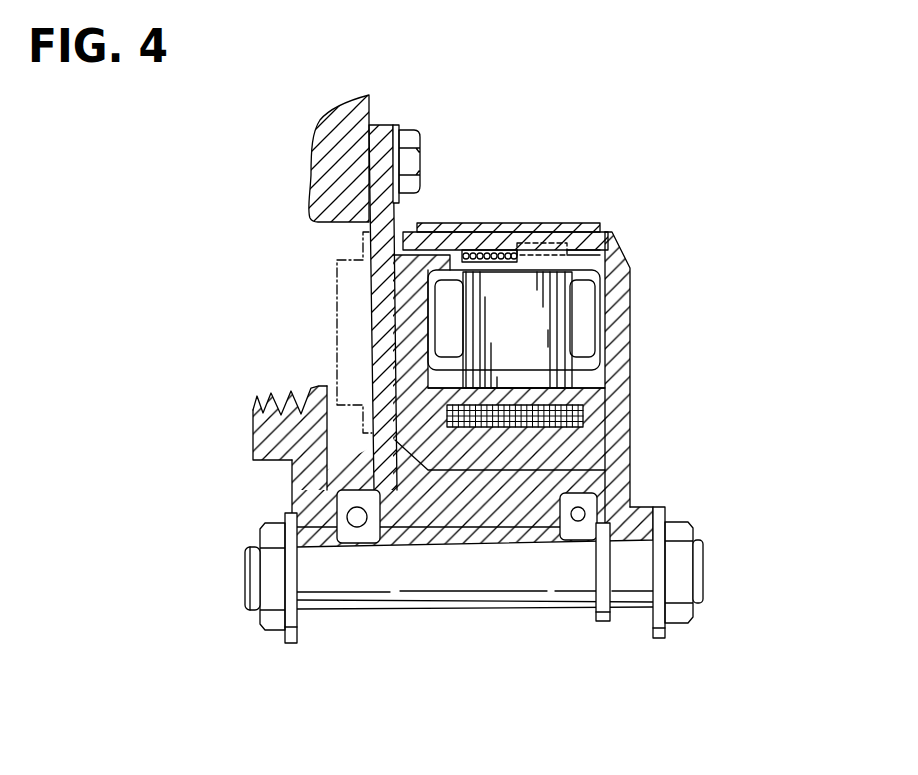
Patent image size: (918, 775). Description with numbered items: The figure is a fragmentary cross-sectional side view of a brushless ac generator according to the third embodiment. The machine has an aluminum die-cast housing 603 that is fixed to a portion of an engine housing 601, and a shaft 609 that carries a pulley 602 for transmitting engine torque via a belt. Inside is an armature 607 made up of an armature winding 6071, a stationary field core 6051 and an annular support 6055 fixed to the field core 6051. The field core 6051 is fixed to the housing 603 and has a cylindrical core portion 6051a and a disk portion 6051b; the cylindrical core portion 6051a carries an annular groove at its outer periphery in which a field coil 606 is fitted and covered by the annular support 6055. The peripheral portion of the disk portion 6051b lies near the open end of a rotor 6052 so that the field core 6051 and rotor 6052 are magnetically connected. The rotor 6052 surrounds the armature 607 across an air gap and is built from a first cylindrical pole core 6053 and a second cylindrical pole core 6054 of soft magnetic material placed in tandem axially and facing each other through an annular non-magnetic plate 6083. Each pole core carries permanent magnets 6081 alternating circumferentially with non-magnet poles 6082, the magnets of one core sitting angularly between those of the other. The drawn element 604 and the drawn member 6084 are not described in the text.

The engine housing 601 is at (333, 136).
The housing 603 is at (380, 188).
The mounting plate 604 is at (346, 287).
The field core 6051 is at (388, 357).
The cylindrical core portion 6051a is at (540, 457).
The disk portion 6051b is at (385, 370).
The pulley 602 is at (262, 394).
The annular non-magnetic plate 6083 is at (514, 250).
The cover plate 6084 is at (593, 225).
The second cylindrical pole core 6054 is at (441, 236).
The first cylindrical pole core 6053 is at (547, 245).
The rotor 6052 is at (600, 242).
The non-magnet poles 6082 is at (572, 252).
The permanent magnets 6081 is at (505, 265).
The armature winding 6071 is at (585, 310).
The armature 607 is at (540, 335).
The annular support 6055 is at (538, 375).
The field coil 606 is at (568, 412).
The shaft 609 is at (573, 553).